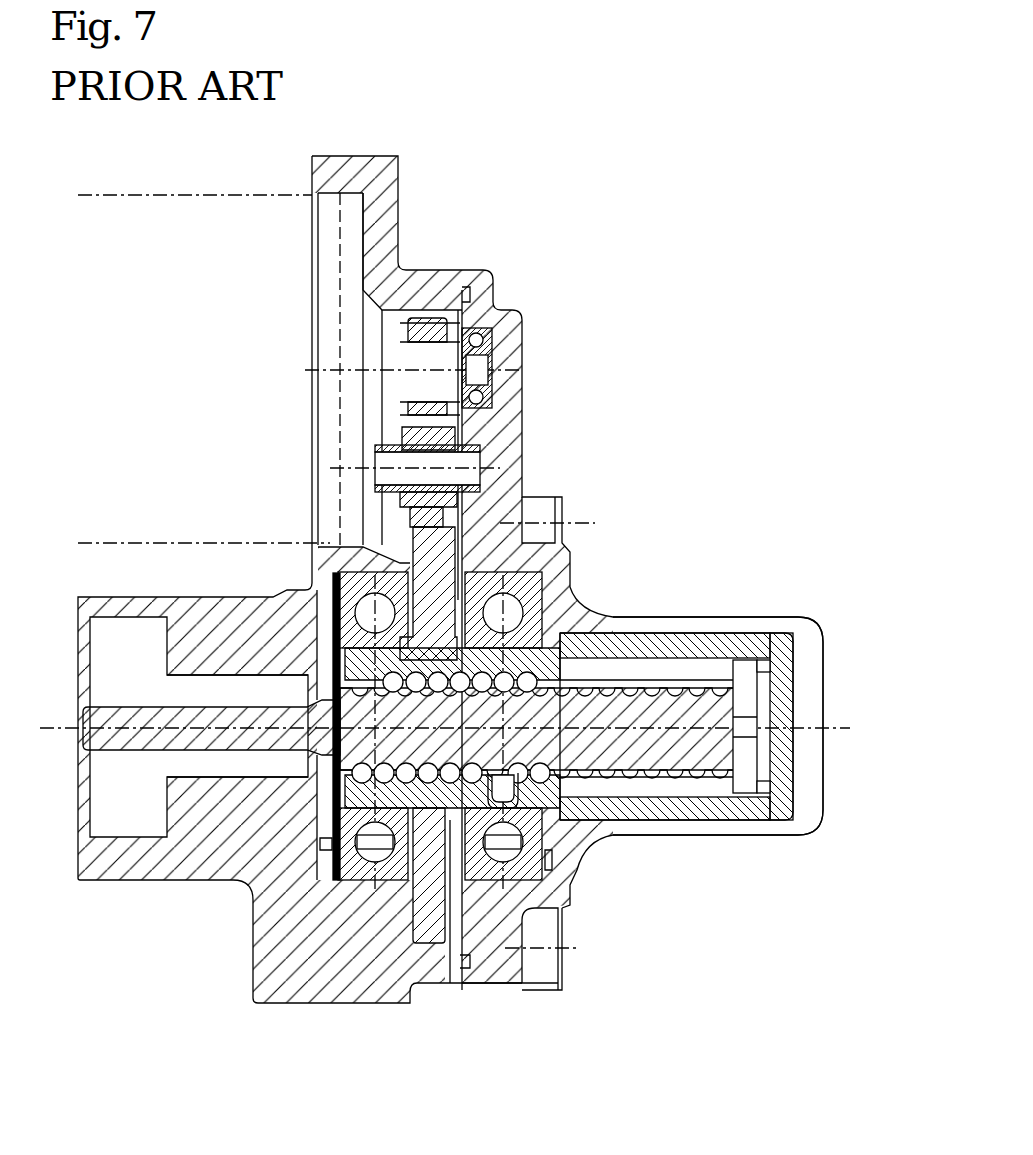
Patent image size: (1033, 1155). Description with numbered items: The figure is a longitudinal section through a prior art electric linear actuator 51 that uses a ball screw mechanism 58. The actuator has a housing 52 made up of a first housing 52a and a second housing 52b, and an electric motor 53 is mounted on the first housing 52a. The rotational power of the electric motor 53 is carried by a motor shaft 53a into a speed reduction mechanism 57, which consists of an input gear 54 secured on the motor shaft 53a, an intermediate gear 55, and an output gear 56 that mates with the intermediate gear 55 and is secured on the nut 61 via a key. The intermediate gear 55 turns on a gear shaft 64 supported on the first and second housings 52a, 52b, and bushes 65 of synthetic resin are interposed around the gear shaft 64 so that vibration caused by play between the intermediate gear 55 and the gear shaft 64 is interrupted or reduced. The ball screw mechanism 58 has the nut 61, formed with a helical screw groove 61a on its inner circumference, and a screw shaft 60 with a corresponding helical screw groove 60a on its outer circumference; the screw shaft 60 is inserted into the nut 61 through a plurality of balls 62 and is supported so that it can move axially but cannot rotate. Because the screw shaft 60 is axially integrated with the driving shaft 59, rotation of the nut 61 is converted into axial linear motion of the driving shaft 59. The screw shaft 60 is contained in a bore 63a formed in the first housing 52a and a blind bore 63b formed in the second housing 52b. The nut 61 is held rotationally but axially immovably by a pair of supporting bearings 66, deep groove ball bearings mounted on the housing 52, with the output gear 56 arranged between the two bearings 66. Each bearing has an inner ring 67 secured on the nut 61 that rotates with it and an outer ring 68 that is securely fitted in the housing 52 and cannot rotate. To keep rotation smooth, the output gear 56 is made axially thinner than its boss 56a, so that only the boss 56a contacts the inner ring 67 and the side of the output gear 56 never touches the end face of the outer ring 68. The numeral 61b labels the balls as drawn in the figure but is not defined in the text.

The electric actuator 51 is at (195, 388).
The housing 52 is at (502, 1080).
The first housing 52a is at (440, 975).
The second housing 52b is at (500, 965).
The electric motor 53 is at (200, 248).
The motor shaft 53a is at (380, 355).
The input gear 54 is at (428, 330).
The intermediate gear 55 is at (485, 490).
The output gear 56 is at (490, 520).
The boss 56a is at (405, 845).
The speed reduction mechanism 57 is at (488, 408).
The ball screw mechanism 58 is at (575, 812).
The driving shaft 59 is at (128, 715).
The screw shaft 60 is at (660, 680).
The helical screw groove 60a is at (620, 782).
The nut 61 is at (330, 640).
The helical screw groove 61a is at (432, 775).
The ball 61b is at (388, 692).
The balls 62 is at (522, 728).
The bore 63a is at (213, 690).
The blind bore 63b is at (700, 665).
The gear shaft 64 is at (375, 470).
The bushes 65 is at (390, 447).
The supporting bearings 66 is at (325, 872).
The inner ring 67 is at (330, 844).
The outer ring 68 is at (335, 592).